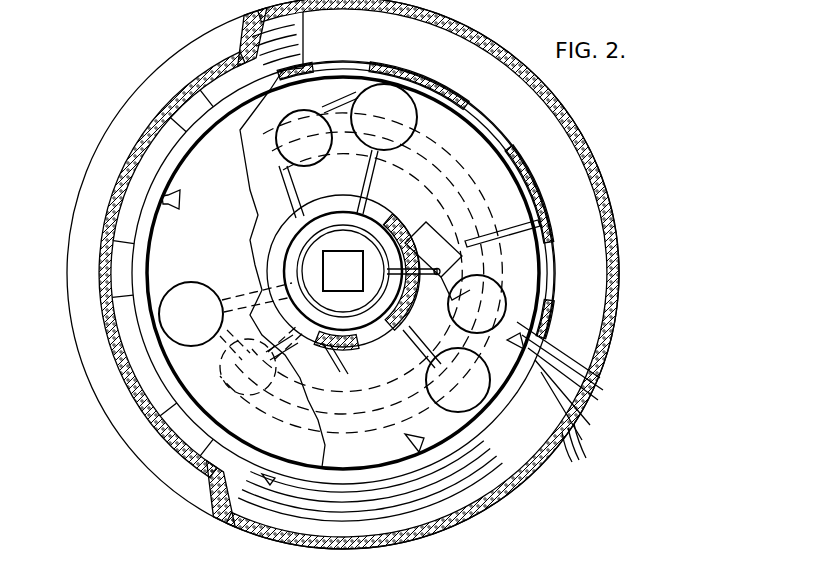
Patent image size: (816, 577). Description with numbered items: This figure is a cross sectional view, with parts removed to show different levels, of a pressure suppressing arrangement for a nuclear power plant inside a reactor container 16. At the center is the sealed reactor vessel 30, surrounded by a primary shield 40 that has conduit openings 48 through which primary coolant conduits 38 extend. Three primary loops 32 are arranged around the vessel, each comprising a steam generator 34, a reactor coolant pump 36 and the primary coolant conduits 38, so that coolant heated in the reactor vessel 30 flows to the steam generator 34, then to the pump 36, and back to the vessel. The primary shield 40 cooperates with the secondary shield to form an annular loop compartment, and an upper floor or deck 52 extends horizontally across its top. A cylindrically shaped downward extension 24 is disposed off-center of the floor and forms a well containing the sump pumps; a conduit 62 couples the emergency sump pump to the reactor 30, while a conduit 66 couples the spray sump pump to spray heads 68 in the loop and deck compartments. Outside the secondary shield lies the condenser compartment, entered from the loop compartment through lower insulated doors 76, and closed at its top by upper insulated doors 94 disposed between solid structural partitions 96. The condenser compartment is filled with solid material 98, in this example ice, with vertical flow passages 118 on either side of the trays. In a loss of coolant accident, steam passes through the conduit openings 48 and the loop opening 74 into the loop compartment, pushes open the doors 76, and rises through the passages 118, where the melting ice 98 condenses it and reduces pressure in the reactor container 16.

The reactor container 16 is at (614, 237).
The downward extension 24 is at (432, 172).
The reactor vessel 30 is at (310, 265).
The primary loops 32 is at (338, 117).
The steam generator 34 is at (405, 125).
The reactor coolant pump 36 is at (278, 130).
The primary coolant conduits 38 is at (330, 110).
The primary shield 40 is at (347, 374).
The conduit openings 48 is at (376, 338).
The upper floor or deck 52 is at (320, 440).
The conduit 62 is at (437, 261).
The conduit 66 is at (505, 225).
The spray heads 68 is at (180, 197).
The loop opening 74 is at (445, 214).
The insulated doors 76 is at (341, 67).
The insulated doors 94 is at (177, 120).
The structural partitions 96 is at (123, 192).
The solid material 98 is at (585, 400).
The vertical flow passages 118 is at (577, 454).